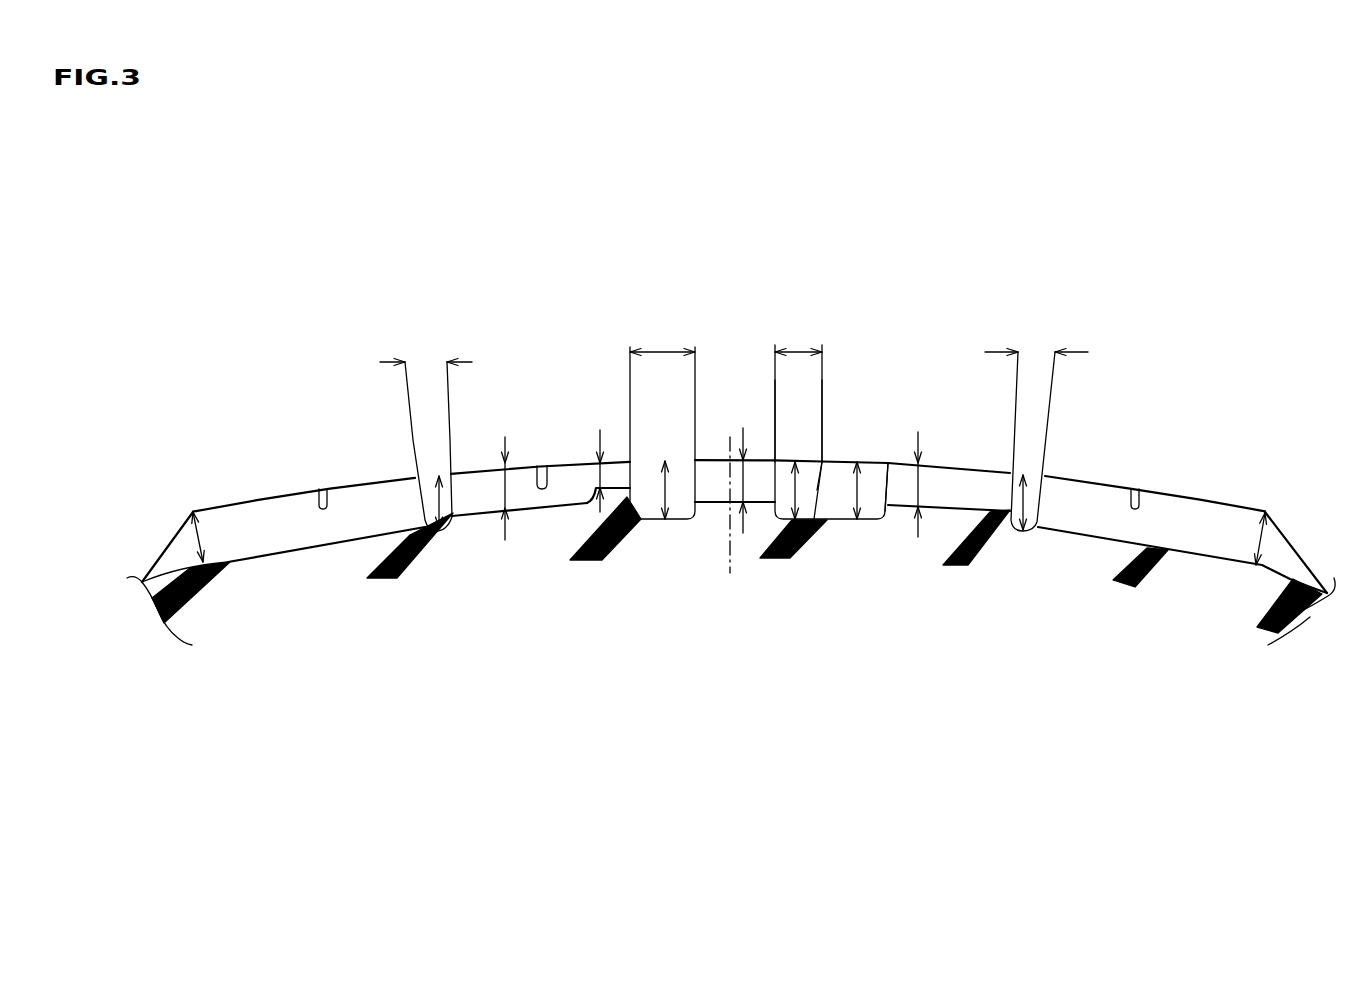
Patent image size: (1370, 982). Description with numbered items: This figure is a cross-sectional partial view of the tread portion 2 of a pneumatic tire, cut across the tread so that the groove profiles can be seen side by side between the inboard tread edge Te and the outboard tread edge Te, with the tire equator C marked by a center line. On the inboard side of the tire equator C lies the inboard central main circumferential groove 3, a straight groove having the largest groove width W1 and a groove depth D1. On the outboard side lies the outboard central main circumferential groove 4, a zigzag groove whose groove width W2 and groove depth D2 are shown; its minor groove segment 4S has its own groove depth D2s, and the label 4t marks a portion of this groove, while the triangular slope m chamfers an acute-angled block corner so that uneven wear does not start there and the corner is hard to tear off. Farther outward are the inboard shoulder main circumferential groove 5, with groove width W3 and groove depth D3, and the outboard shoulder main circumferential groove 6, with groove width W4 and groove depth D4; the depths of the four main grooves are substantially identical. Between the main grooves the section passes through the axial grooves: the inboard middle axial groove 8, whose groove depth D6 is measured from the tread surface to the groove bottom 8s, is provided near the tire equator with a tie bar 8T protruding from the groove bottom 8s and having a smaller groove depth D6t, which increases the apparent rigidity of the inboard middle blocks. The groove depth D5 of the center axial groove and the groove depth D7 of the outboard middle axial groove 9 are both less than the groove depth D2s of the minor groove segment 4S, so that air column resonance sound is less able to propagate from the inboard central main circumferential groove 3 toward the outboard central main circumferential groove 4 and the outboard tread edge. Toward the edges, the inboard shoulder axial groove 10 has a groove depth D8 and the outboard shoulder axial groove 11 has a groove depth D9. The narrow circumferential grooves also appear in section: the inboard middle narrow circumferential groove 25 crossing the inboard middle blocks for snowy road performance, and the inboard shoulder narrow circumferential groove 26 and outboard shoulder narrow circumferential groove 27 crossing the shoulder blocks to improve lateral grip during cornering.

The tread portion 2 is at (1100, 438).
The inboard central main circumferential groove 3 is at (678, 487).
The outboard central main circumferential groove 4 is at (842, 432).
The minor groove segment 4S is at (840, 478).
The narrow top portion of shoulder main groove 4t is at (785, 483).
The triangular slope m is at (822, 470).
The inboard shoulder main circumferential groove 5 is at (441, 492).
The outboard shoulder main circumferential groove 6 is at (1020, 490).
The inboard middle axial groove 8 is at (480, 480).
The groove bottom 8s is at (565, 502).
The tie bar 8T is at (620, 487).
The outboard middle axial groove 9 is at (970, 487).
The inboard shoulder axial groove 10 is at (268, 520).
The outboard shoulder axial groove 11 is at (1187, 510).
The inboard middle narrow circumferential groove 25 is at (323, 486).
The inboard shoulder narrow circumferential groove 26 is at (537, 463).
The outboard shoulder narrow circumferential groove 27 is at (1135, 487).
The tread edge Te is at (193, 511).
The tire equator C is at (729, 520).
The groove width W1 is at (662, 339).
The groove width W2 is at (798, 341).
The groove width W3 is at (426, 350).
The groove width W4 is at (1036, 341).
The groove depth D1 is at (661, 474).
The groove depth D2 is at (821, 467).
The groove depth D2s is at (857, 489).
The groove depth D3 is at (412, 530).
The groove depth D4 is at (1027, 508).
The groove depth D5 is at (748, 485).
The groove depth D6 is at (503, 482).
The groove depth D6t is at (598, 472).
The groove depth D7 is at (920, 486).
The groove depth D8 is at (200, 530).
The groove depth D9 is at (1256, 533).